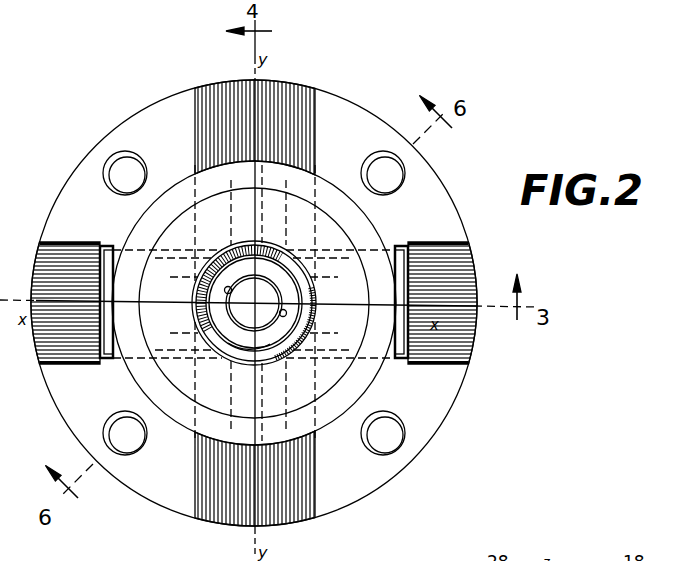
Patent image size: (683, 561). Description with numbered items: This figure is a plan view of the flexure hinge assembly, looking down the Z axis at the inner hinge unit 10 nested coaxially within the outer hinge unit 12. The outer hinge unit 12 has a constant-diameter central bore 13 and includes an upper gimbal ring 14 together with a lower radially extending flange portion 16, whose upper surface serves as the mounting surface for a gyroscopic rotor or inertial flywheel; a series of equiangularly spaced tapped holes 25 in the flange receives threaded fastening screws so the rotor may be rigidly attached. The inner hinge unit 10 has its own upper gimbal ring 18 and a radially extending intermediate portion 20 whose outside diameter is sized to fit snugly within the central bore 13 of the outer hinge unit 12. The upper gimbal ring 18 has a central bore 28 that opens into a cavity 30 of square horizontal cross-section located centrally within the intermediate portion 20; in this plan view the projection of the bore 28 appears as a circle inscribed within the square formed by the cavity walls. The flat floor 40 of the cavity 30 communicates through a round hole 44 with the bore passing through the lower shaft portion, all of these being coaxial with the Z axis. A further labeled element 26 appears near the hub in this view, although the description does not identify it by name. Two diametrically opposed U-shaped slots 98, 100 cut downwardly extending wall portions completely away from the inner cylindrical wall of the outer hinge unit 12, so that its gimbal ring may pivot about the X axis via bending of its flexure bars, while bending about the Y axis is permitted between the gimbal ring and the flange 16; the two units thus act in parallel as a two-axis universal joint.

The inner hinge unit 10 is at (208, 235).
The outer hinge unit 12 is at (101, 390).
The central bore 13 is at (337, 373).
The upper gimbal ring 14 is at (268, 478).
The flange portion 16 is at (58, 411).
The upper gimbal ring 18 is at (273, 242).
The intermediate portion 20 is at (338, 238).
The tapped holes 25 is at (143, 157).
The bearing ring 26 is at (197, 299).
The central bore 28 is at (291, 348).
The cavity 30 is at (256, 335).
The floor 40 is at (228, 343).
The round hole 44 is at (297, 302).
The U-shaped slot 98 is at (104, 243).
The U-shaped slot 100 is at (432, 336).